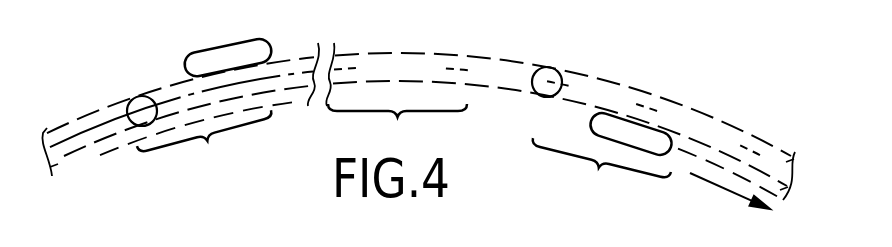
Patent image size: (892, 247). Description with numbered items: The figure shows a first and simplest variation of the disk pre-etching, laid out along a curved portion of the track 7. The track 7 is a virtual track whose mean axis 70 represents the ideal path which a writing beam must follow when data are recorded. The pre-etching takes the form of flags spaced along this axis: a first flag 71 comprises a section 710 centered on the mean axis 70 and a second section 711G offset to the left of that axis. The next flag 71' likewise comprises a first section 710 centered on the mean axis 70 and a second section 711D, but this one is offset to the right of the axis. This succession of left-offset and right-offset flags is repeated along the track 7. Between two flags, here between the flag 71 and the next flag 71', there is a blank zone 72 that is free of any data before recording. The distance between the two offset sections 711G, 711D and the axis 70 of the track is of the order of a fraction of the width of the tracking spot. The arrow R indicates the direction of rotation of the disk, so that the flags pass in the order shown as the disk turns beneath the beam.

The track 7 is at (418, 109).
The mean axis 70 is at (374, 68).
The flag 71 is at (205, 93).
The next flag 71' is at (614, 130).
The blank zone 72 is at (397, 128).
The section centered on the mean axis 710 is at (135, 106).
The second section offset to the left 711G is at (228, 47).
The second section offset to the right 711D is at (622, 124).
The arrow indicating direction of rotation R is at (724, 189).